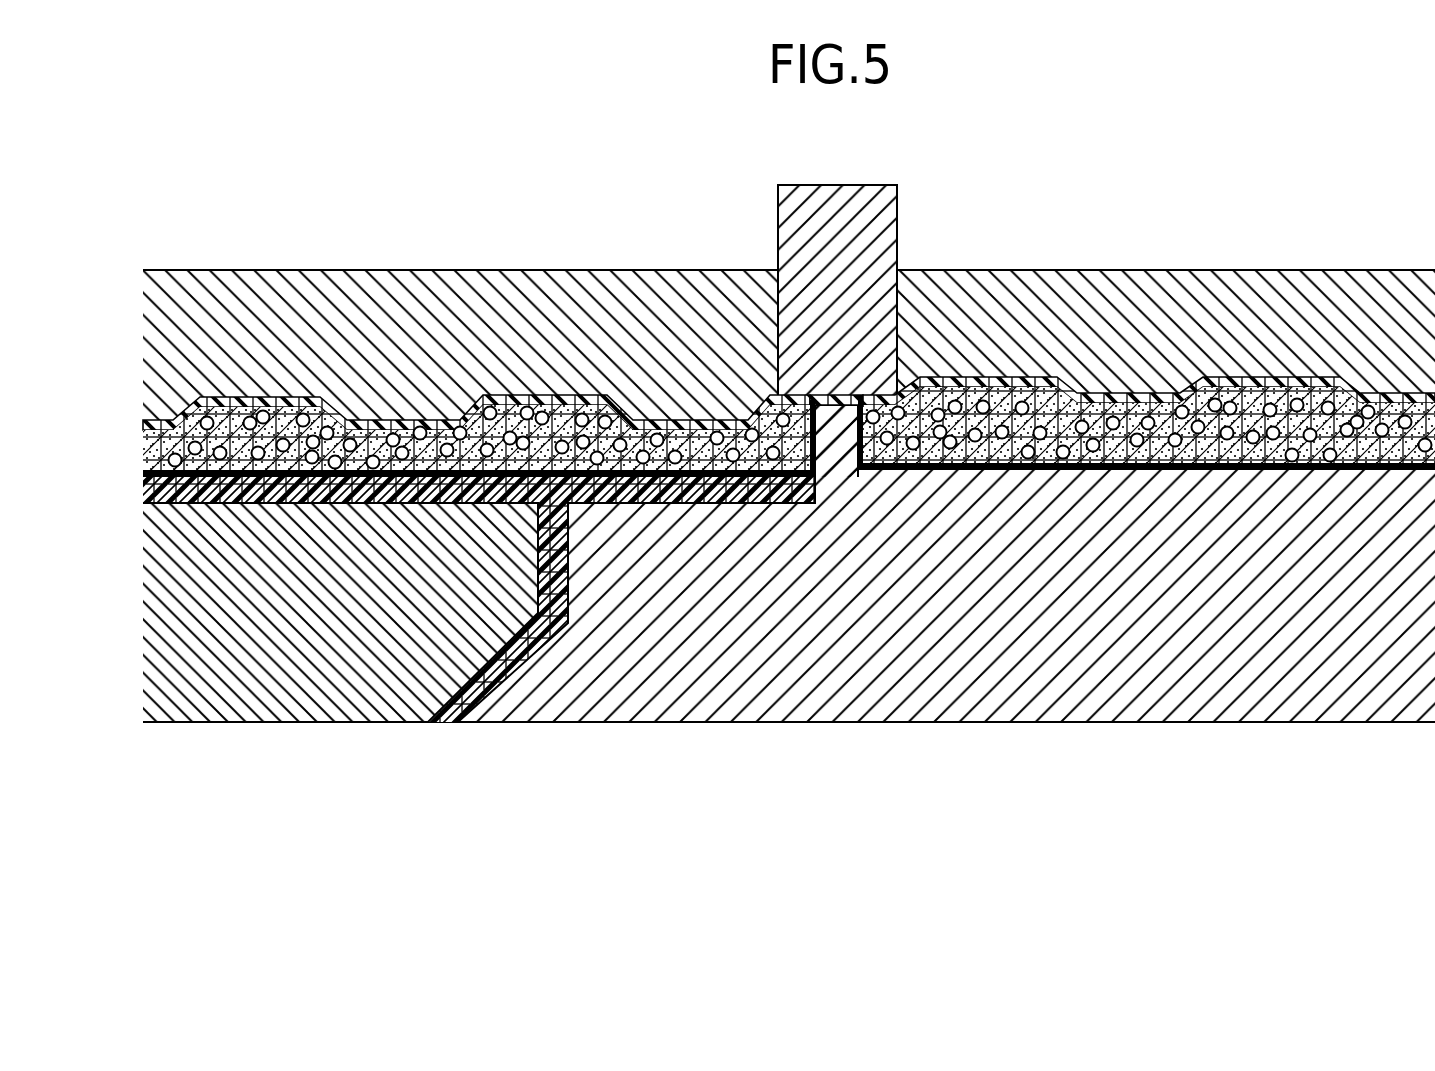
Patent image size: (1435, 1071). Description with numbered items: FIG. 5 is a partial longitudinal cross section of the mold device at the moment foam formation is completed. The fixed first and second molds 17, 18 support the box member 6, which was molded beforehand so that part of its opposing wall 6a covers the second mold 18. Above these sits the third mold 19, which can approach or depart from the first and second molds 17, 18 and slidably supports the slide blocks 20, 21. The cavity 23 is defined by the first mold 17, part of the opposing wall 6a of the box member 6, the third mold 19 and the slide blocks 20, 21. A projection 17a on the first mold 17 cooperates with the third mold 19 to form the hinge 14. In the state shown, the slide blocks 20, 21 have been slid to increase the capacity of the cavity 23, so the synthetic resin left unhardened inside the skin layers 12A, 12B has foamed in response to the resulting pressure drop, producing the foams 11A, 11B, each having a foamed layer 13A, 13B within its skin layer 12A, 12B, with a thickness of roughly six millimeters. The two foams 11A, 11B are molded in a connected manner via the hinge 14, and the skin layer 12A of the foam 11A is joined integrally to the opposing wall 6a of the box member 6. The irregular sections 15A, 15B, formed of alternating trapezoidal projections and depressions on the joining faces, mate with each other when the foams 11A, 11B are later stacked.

The box member 6 is at (479, 623).
The opposing wall 6a is at (385, 503).
The foam 11A is at (478, 477).
The foam 11B is at (1146, 518).
The skin layer 12A is at (476, 445).
The skin layer 12B is at (1253, 473).
The foamed layer 13A is at (767, 570).
The foamed layer 13B is at (1287, 563).
The hinge 14 is at (817, 403).
The irregular section 15A is at (541, 397).
The irregular section 15B is at (1261, 377).
The first mold 17 is at (946, 538).
The projection 17a is at (838, 403).
The second mold 18 is at (338, 703).
The third mold 19 is at (888, 215).
The slide block 20 is at (348, 298).
The slide block 21 is at (1057, 293).
The cavity 23 is at (395, 433).